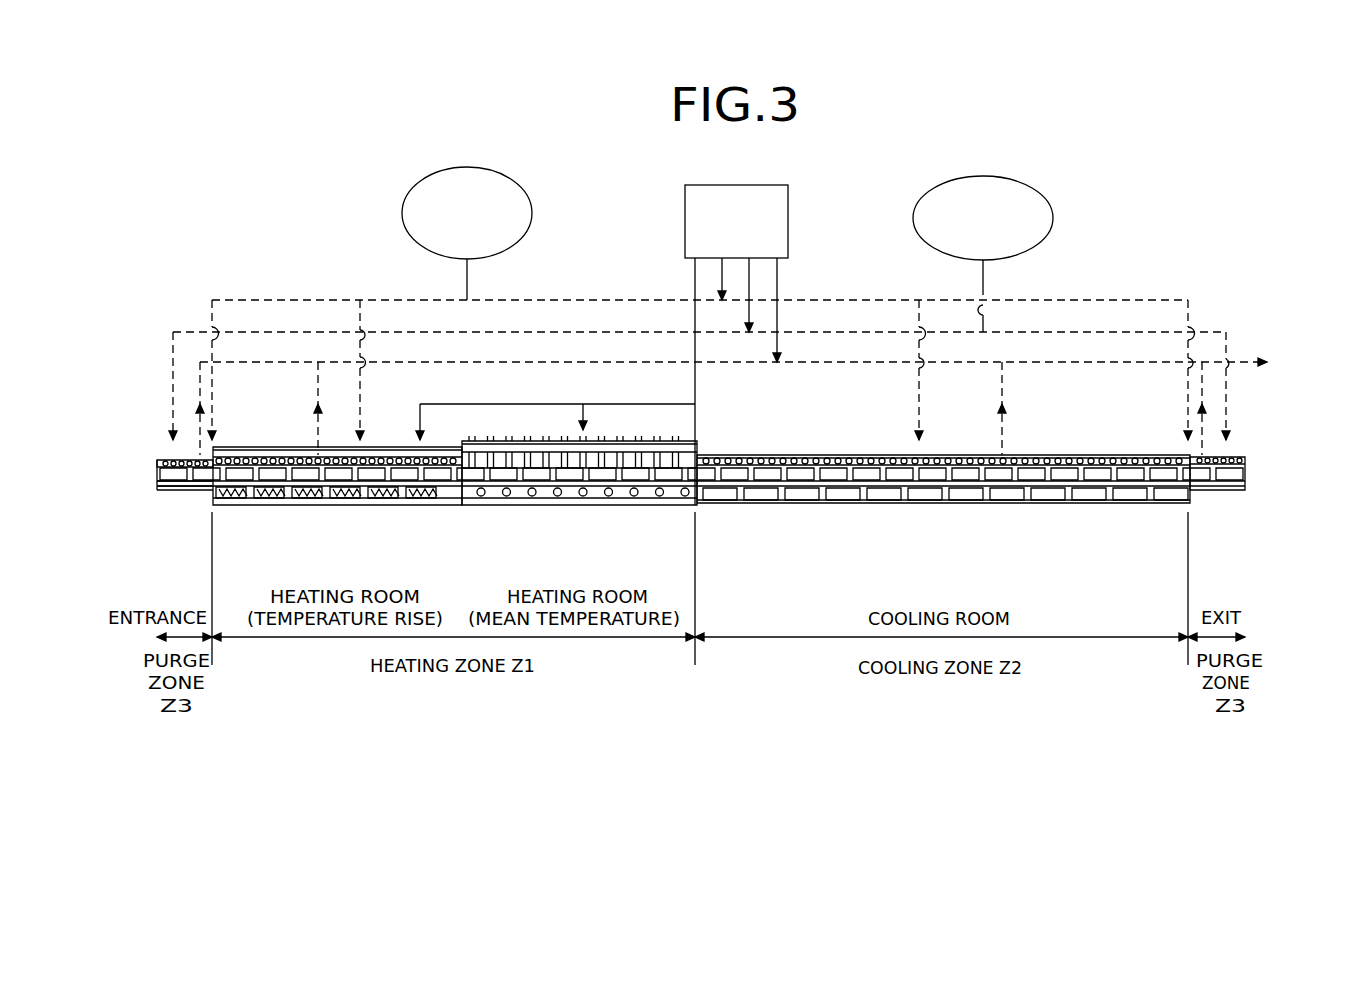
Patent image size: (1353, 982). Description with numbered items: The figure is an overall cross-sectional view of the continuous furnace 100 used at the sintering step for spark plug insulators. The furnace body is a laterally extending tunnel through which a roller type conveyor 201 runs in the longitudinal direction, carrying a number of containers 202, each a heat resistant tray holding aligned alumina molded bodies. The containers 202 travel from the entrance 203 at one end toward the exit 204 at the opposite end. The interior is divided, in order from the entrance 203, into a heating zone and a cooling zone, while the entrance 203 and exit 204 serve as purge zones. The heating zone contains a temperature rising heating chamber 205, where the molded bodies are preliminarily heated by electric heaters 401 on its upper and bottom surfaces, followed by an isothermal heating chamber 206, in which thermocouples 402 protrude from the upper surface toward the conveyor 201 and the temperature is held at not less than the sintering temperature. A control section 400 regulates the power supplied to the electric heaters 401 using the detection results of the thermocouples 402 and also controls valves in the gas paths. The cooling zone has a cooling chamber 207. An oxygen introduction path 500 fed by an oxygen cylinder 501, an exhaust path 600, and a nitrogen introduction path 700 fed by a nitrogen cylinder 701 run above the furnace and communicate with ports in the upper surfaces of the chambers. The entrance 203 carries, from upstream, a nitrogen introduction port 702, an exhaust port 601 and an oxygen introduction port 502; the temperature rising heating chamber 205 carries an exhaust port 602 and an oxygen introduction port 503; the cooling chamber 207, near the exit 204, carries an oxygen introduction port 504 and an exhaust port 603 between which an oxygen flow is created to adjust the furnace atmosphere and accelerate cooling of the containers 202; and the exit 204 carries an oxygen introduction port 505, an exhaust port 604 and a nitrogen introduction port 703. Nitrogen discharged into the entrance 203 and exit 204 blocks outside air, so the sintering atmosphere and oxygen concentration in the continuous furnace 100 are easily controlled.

The continuous furnace 100 is at (1075, 243).
The conveyor 201 is at (173, 490).
The container 202 is at (163, 480).
The entrance 203 is at (192, 498).
The exit 204 is at (1226, 493).
The temperature rising heating chamber 205 is at (342, 500).
The isothermal heating chamber 206 is at (586, 500).
The cooling chamber 207 is at (923, 503).
The control section 400 is at (602, 345).
The electric heater 401 is at (433, 540).
The thermocouple 402 is at (633, 443).
The oxygen introduction path 500 is at (563, 298).
The oxygen cylinder 501 is at (467, 233).
The oxygen introduction port 502 is at (322, 446).
The oxygen introduction port 503 is at (392, 445).
The oxygen introduction port 504 is at (920, 455).
The oxygen introduction port 505 is at (1143, 455).
The exhaust path 600 is at (848, 362).
The exhaust port 601 is at (205, 455).
The exhaust port 602 is at (328, 445).
The exhaust port 603 is at (1002, 455).
The exhaust port 604 is at (1209, 455).
The nitrogen introduction path 700 is at (808, 332).
The nitrogen cylinder 701 is at (983, 254).
The nitrogen introduction port 702 is at (180, 452).
The nitrogen introduction port 703 is at (1245, 458).